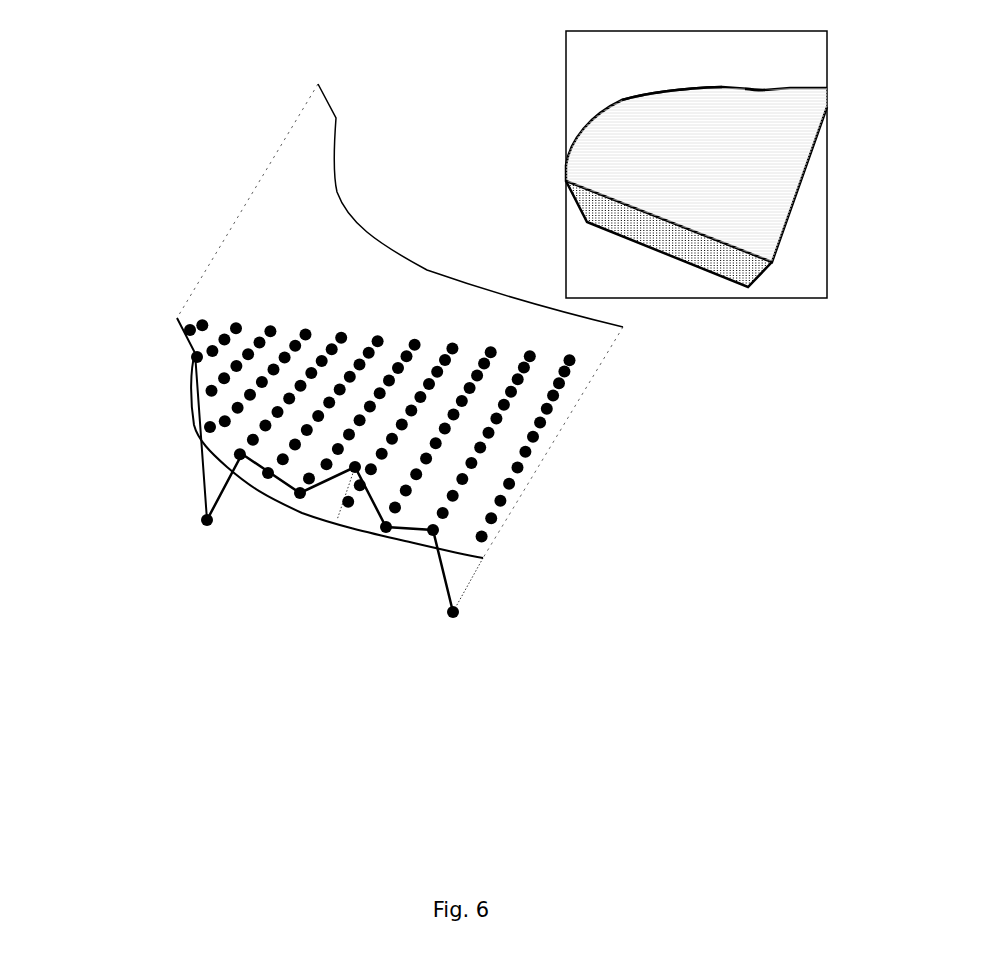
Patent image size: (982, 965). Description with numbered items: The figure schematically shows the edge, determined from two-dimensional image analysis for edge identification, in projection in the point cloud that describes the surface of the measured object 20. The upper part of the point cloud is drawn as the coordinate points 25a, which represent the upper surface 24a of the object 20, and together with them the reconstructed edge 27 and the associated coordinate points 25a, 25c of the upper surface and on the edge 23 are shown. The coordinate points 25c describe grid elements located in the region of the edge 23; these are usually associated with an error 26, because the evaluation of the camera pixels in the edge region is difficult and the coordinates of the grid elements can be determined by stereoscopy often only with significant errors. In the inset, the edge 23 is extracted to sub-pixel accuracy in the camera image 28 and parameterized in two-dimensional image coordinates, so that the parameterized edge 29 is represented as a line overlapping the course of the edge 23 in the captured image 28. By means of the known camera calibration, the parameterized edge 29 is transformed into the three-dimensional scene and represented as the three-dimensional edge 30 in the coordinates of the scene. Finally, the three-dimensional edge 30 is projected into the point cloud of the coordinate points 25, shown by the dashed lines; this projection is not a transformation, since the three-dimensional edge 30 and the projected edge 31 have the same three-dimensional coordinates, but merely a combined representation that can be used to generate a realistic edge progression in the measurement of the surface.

The object 20 is at (608, 92).
The edge 23 is at (685, 66).
The upper surface 24a is at (670, 174).
The coordinate points 25 is at (558, 438).
The coordinate points of the upper surface 25a is at (307, 325).
The coordinate points at the edge 25c is at (456, 618).
The error 26 is at (457, 597).
The reconstructed edge 27 is at (447, 580).
The camera image 28 is at (788, 280).
The parameterized edge 29 is at (752, 90).
The three-dimensional edge 30 is at (336, 118).
The projected edge 31 is at (192, 393).